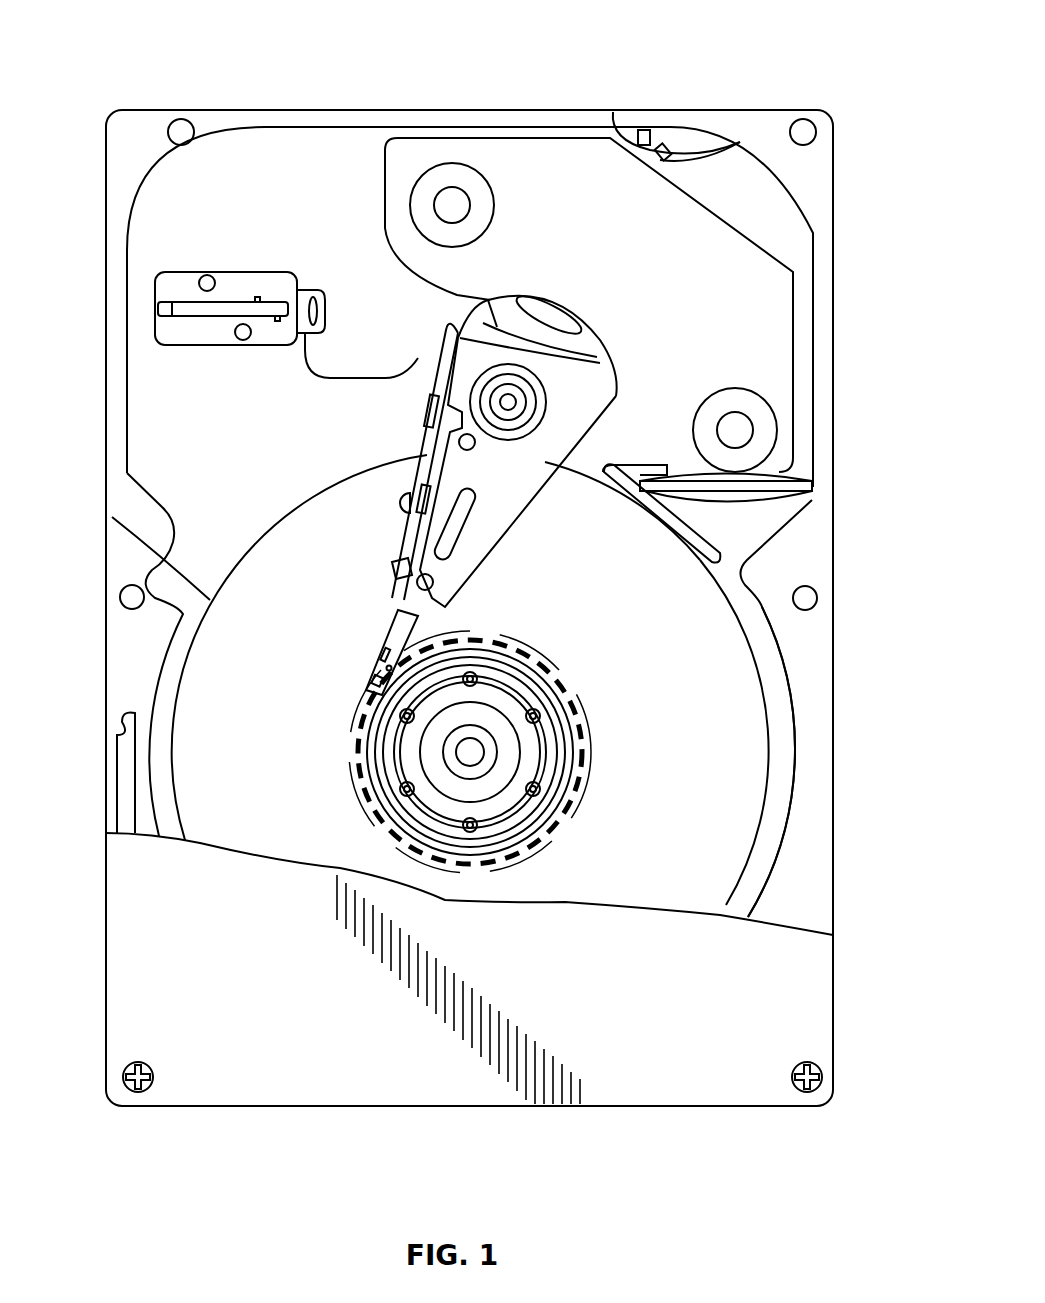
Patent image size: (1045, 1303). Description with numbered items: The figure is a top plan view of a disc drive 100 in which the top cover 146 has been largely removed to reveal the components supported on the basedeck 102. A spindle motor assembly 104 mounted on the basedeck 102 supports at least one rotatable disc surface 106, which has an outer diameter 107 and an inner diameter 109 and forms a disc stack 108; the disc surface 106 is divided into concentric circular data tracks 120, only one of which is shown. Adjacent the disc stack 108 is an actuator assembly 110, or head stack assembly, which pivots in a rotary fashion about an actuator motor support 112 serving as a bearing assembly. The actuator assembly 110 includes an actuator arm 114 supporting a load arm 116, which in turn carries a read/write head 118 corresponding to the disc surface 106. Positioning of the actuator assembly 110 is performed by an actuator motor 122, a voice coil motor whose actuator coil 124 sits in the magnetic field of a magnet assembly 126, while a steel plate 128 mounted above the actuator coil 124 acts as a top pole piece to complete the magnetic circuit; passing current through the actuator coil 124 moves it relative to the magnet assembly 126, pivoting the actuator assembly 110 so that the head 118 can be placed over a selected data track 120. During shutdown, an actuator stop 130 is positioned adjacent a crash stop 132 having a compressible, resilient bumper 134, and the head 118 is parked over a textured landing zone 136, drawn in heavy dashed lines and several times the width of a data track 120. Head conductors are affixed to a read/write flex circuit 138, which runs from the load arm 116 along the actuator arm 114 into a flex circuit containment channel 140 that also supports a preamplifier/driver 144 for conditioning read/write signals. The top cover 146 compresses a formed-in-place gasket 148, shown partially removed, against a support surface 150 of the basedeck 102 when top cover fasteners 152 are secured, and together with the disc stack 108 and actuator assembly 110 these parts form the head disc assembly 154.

The disc drive 100 is at (375, 86).
The basedeck 102 is at (300, 170).
The spindle motor assembly 104 is at (509, 721).
The rotatable disc surface 106 is at (667, 627).
The outer diameter 107 is at (170, 557).
The disc stack 108 is at (772, 771).
The inner diameter 109 is at (383, 791).
The actuator assembly 110 is at (502, 518).
The actuator motor support 112 is at (550, 388).
The actuator arm 114 is at (440, 567).
The load arm 116 is at (382, 638).
The read/write head 118 is at (383, 672).
The data track 120 is at (600, 806).
The actuator motor 122 is at (780, 256).
The actuator coil 124 is at (513, 313).
The magnet assembly 126 is at (535, 163).
The steel plate 128 is at (765, 345).
The actuator stop 130 is at (722, 145).
The crash stop 132 is at (636, 136).
The bumper 134 is at (662, 140).
The landing zone 136 is at (563, 815).
The read/write flex circuit 138 is at (302, 371).
The flex circuit containment channel 140 is at (408, 497).
The preamplifier/driver 144 is at (168, 335).
The top cover 146 is at (165, 915).
The formed-in-place gasket 148 is at (110, 738).
The support surface 150 is at (790, 948).
The top cover fasteners 152 is at (815, 1055).
The head disc assembly 154 is at (447, 106).